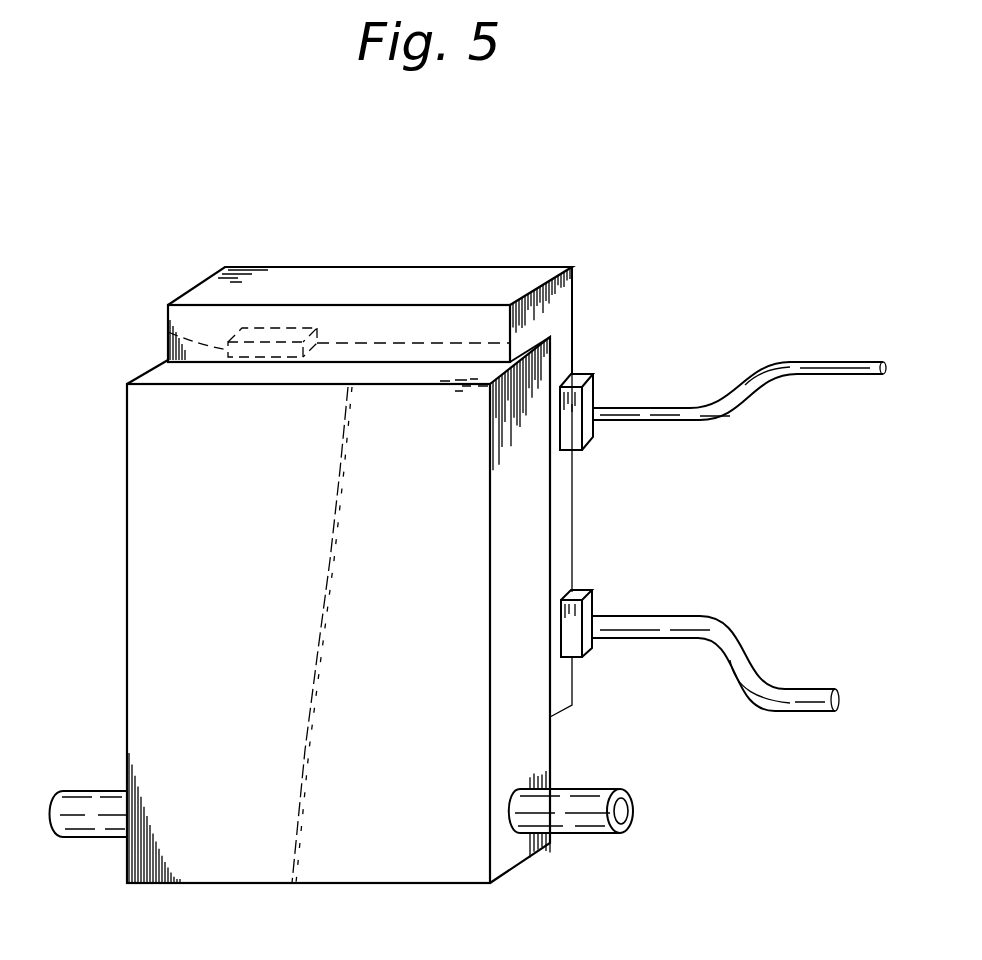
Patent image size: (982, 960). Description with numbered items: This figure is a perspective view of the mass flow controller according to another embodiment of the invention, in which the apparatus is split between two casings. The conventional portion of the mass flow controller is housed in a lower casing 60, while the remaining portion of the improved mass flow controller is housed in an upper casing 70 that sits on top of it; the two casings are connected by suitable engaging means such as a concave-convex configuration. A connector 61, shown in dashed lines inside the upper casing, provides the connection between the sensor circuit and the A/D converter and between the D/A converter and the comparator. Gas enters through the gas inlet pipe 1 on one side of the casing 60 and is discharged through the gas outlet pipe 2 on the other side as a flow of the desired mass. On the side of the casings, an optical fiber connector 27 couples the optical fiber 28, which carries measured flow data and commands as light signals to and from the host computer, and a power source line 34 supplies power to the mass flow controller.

The gas inlet pipe 1 is at (78, 790).
The gas outlet pipe 2 is at (632, 815).
The optical fiber connector 27 is at (595, 388).
The optical fiber 28 is at (862, 376).
The power source line 34 is at (770, 690).
The casing 60 is at (127, 560).
The connector 61 is at (168, 332).
The casing 70 is at (388, 266).